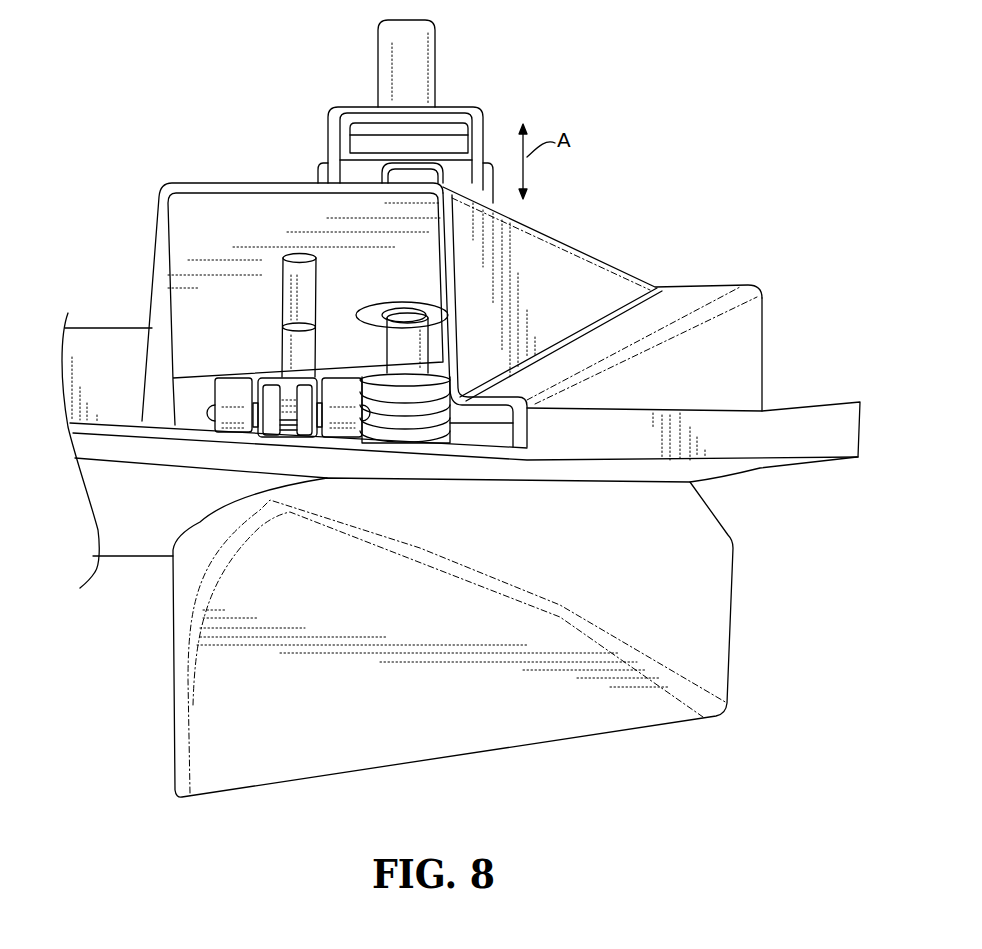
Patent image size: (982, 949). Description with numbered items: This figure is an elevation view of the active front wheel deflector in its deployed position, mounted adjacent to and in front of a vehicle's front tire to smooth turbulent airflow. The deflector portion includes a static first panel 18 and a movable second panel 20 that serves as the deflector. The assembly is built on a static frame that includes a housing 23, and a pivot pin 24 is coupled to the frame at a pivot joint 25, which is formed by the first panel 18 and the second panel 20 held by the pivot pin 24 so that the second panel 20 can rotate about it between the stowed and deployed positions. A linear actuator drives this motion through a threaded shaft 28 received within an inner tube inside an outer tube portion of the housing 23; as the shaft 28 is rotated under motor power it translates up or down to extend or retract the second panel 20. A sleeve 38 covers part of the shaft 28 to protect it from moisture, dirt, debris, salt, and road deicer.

The first panel 18 is at (143, 543).
The second panel 20 is at (538, 741).
The housing 23 is at (603, 258).
The pivot pin 24 is at (370, 142).
The pivot joint 25 is at (213, 388).
The shaft 28 is at (764, 331).
The sleeve 38 is at (452, 410).